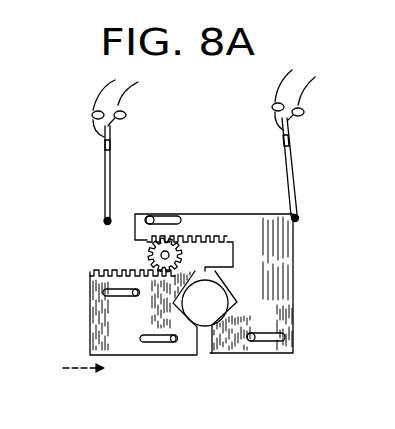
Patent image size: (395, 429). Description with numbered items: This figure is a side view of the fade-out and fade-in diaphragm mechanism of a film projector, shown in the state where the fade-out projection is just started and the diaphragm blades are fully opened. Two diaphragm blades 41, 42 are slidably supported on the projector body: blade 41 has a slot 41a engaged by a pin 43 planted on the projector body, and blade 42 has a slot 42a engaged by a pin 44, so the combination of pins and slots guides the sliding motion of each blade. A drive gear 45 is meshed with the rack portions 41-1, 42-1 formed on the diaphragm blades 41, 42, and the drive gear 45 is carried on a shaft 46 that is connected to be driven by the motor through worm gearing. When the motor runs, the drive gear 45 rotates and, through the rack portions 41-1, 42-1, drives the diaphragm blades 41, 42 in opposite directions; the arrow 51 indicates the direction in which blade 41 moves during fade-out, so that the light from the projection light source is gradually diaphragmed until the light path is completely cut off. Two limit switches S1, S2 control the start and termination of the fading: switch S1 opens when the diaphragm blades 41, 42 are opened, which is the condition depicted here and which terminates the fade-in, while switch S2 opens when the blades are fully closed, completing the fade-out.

The limit switch S1 is at (293, 176).
The limit switch S2 is at (105, 172).
The diaphragm blade 41 is at (288, 303).
The slot 41a is at (272, 332).
The rack portion 41-1 is at (192, 243).
The diaphragm blade 42 is at (190, 347).
The slot 42a is at (114, 297).
The rack portion 42-1 is at (114, 268).
The pin 43 is at (150, 216).
The pin 44 is at (133, 300).
The drive gear 45 is at (152, 257).
The shaft 46 is at (213, 239).
The arrow 51 is at (210, 198).